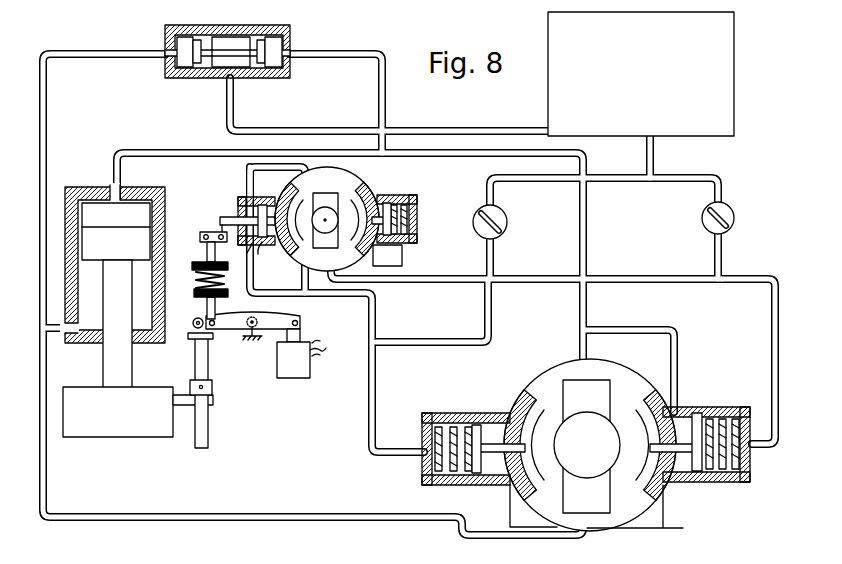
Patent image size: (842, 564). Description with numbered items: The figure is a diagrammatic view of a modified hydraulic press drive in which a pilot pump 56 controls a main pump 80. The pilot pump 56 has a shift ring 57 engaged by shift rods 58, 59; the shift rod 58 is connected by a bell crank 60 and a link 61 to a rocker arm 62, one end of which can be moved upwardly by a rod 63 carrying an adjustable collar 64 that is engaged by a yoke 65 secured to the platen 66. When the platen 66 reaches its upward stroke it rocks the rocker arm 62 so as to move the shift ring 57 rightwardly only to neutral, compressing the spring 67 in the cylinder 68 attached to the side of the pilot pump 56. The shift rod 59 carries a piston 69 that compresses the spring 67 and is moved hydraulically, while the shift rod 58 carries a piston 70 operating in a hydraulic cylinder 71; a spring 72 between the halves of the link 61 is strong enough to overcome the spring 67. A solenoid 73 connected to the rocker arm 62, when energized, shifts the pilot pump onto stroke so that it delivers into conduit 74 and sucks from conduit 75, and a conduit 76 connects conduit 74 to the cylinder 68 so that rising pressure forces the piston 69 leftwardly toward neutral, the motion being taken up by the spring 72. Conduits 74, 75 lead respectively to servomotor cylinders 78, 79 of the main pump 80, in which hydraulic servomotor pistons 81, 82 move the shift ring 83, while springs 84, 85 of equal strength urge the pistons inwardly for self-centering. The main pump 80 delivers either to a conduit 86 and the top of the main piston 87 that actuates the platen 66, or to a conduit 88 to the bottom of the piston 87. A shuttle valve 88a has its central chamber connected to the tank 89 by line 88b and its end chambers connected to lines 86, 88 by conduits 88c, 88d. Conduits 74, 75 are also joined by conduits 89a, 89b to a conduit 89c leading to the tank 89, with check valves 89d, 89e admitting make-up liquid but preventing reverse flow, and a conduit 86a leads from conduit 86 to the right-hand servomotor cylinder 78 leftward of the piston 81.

The pilot pump 56 is at (329, 214).
The shift ring 57 is at (352, 206).
The shift rod 58 is at (233, 216).
The shift rod 59 is at (387, 255).
The bell crank 60 is at (220, 230).
The link 61 is at (207, 245).
The rocker arm 62 is at (228, 316).
The rod 63 is at (204, 370).
The collar 64 is at (213, 387).
The yoke 65 is at (214, 400).
The platen 66 is at (143, 412).
The spring 67 is at (416, 214).
The cylinder 68 is at (418, 239).
The piston 69 is at (412, 213).
The piston 70 is at (238, 254).
The hydraulic cylinder 71 is at (269, 254).
The spring 72 is at (222, 282).
The solenoid 73 is at (308, 370).
The conduit 74 is at (466, 281).
The conduit 75 is at (378, 336).
The conduit 76 is at (413, 272).
The servomotor cylinder 78 is at (720, 433).
The servomotor cylinder 79 is at (451, 436).
The main pump 80 is at (587, 442).
The hydraulic servomotor piston 81 is at (698, 417).
The hydraulic servomotor piston 82 is at (478, 421).
The shift ring 83 is at (660, 401).
The spring 84 is at (740, 411).
The spring 85 is at (455, 415).
The conduit 86 is at (588, 312).
The conduit 86a is at (677, 358).
The main piston 87 is at (120, 243).
The conduit 88 is at (356, 512).
The shuttle valve 88a is at (287, 79).
The line 88b is at (465, 118).
The conduit 88c is at (345, 51).
The conduit 88d is at (147, 60).
The tank 89 is at (592, 86).
The conduit 89a is at (722, 258).
The conduit 89b is at (495, 253).
The conduit 89c is at (653, 166).
The check valve 89d is at (735, 219).
The check valve 89e is at (508, 221).